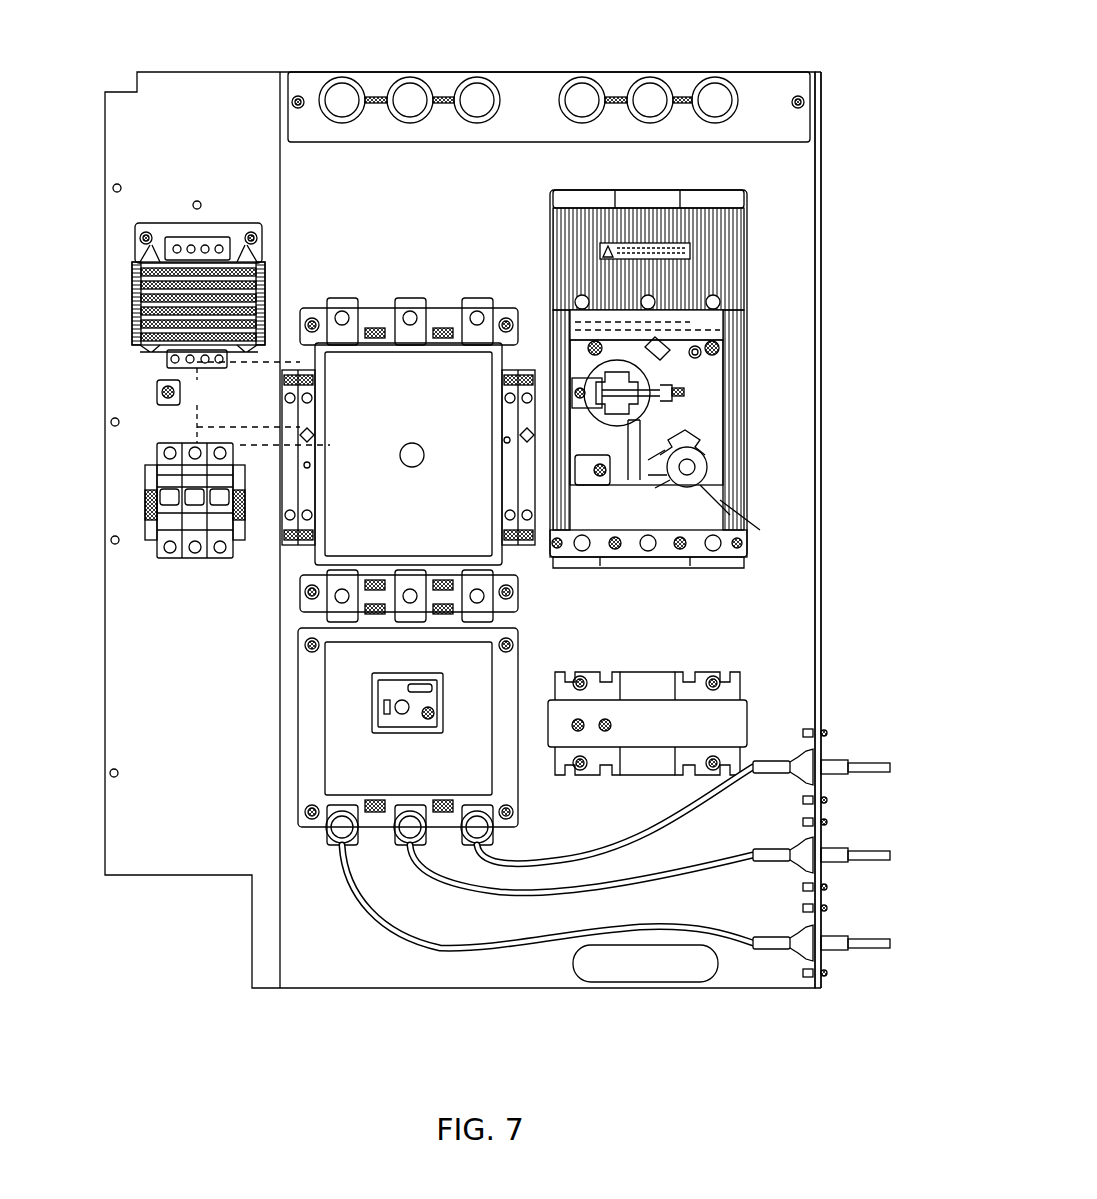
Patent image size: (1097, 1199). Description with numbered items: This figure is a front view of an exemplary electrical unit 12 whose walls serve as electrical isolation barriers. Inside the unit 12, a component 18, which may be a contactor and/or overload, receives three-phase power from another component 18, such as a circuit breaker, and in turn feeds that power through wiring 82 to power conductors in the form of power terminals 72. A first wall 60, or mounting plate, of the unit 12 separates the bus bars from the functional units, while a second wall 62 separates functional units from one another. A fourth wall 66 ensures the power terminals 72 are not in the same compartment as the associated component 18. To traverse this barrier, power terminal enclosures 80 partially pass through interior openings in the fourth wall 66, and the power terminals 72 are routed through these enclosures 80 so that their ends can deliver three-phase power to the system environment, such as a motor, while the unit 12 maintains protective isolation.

The electrical unit 12 is at (839, 92).
The component 18 is at (395, 312).
The first wall 60 is at (777, 143).
The second wall 62 is at (280, 717).
The fourth wall 66 is at (821, 516).
The power terminals 72 is at (890, 943).
The power terminal enclosures 80 is at (798, 930).
The wiring 82 is at (522, 964).